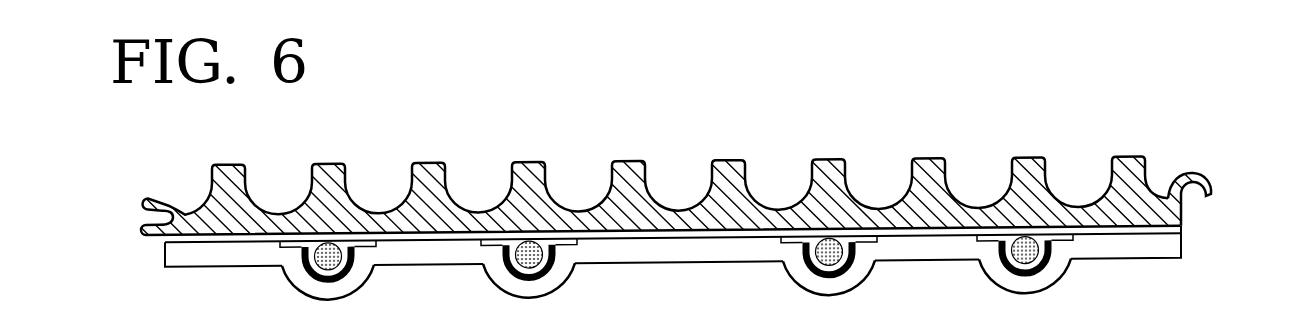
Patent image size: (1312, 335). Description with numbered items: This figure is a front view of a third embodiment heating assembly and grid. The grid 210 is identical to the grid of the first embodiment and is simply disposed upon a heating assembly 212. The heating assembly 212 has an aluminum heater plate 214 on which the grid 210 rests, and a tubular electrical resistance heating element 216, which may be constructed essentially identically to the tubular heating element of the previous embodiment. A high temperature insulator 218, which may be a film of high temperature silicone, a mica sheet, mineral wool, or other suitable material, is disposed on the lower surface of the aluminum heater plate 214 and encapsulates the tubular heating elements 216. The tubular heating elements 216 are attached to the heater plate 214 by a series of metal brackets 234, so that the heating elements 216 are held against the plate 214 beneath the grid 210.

The grid 210 is at (550, 192).
The heating assembly 212 is at (198, 268).
The aluminum heater plate 214 is at (1180, 230).
The tubular electrical resistance heating element 216 is at (338, 261).
The insulator 218 is at (674, 259).
The metal brackets 234 is at (286, 272).